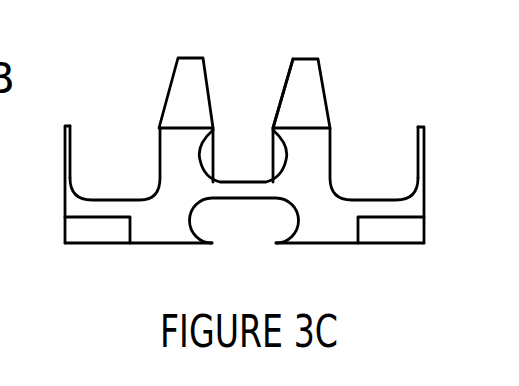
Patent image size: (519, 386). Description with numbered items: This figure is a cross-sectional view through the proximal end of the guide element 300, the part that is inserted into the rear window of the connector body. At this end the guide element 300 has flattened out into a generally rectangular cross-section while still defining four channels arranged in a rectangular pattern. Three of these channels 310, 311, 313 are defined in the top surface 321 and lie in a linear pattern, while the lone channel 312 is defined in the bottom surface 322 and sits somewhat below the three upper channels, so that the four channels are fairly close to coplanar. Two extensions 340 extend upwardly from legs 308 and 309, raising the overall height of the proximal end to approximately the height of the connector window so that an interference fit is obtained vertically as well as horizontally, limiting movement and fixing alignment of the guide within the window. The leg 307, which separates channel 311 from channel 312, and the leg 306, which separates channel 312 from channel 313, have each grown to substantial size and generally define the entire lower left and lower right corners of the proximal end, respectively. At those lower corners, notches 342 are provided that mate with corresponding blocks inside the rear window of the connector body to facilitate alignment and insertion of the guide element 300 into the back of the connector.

The guide element 300 is at (449, 141).
The leg 306 is at (424, 207).
The leg 307 is at (64, 200).
The leg 308 is at (170, 152).
The leg 309 is at (315, 150).
The channel 310 is at (243, 148).
The channel 311 is at (114, 158).
The channel 312 is at (243, 225).
The channel 313 is at (368, 160).
The top surface 321 is at (310, 127).
The bottom surface 322 is at (368, 244).
The extension 340 is at (190, 63).
The notch 342 is at (83, 233).